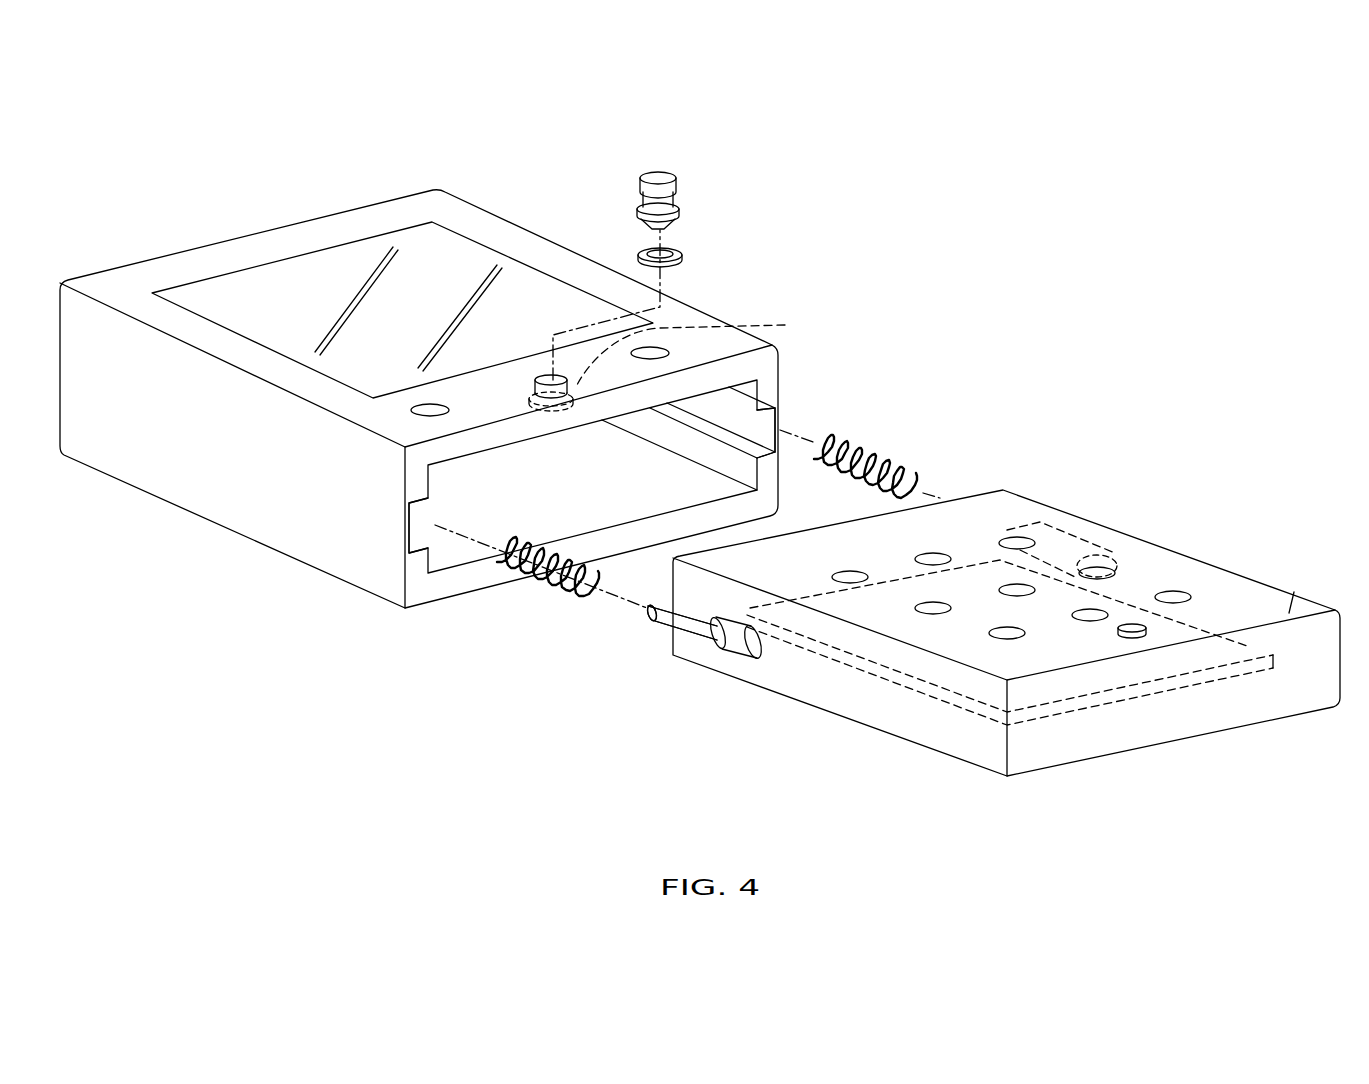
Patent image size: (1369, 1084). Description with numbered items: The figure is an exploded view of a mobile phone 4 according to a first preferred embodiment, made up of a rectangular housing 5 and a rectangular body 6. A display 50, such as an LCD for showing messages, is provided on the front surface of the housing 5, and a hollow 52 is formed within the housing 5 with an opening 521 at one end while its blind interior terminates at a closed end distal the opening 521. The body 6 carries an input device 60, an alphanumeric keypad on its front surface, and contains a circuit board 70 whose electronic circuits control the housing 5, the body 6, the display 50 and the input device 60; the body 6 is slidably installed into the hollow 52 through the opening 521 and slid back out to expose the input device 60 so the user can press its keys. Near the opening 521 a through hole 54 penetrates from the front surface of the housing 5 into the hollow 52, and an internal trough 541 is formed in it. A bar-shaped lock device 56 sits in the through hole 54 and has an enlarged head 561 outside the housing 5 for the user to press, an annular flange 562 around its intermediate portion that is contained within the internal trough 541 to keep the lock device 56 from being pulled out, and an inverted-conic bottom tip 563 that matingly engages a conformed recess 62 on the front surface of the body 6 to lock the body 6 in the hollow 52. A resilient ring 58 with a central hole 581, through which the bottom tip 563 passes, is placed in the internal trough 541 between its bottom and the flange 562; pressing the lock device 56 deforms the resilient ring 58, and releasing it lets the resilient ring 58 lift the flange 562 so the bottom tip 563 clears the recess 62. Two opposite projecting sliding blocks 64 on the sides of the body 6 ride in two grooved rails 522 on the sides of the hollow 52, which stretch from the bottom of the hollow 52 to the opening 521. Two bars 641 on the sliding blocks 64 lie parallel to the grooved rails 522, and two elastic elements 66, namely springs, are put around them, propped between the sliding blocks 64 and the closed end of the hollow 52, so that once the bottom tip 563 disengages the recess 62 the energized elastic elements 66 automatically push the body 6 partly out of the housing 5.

The mobile phone 4 is at (1093, 300).
The housing 5 is at (248, 505).
The display 50 is at (297, 273).
The hollow 52 is at (477, 574).
The opening 521 is at (623, 490).
The grooved rails 522 is at (752, 422).
The through hole 54 is at (550, 375).
The internal trough 541 is at (620, 364).
The lock device 56 is at (707, 173).
The enlarged head 561 is at (662, 176).
The annular flange 562 is at (640, 203).
The inverted-conic bottom tip 563 is at (667, 232).
The resilient ring 58 is at (705, 262).
The central hole 581 is at (673, 260).
The body 6 is at (1003, 512).
The input device 60 is at (1178, 595).
The recess 62 is at (1133, 624).
The sliding blocks 64 is at (752, 641).
The bars 641 is at (1065, 533).
The elastic elements 66 is at (897, 462).
The circuit board 70 is at (1260, 648).